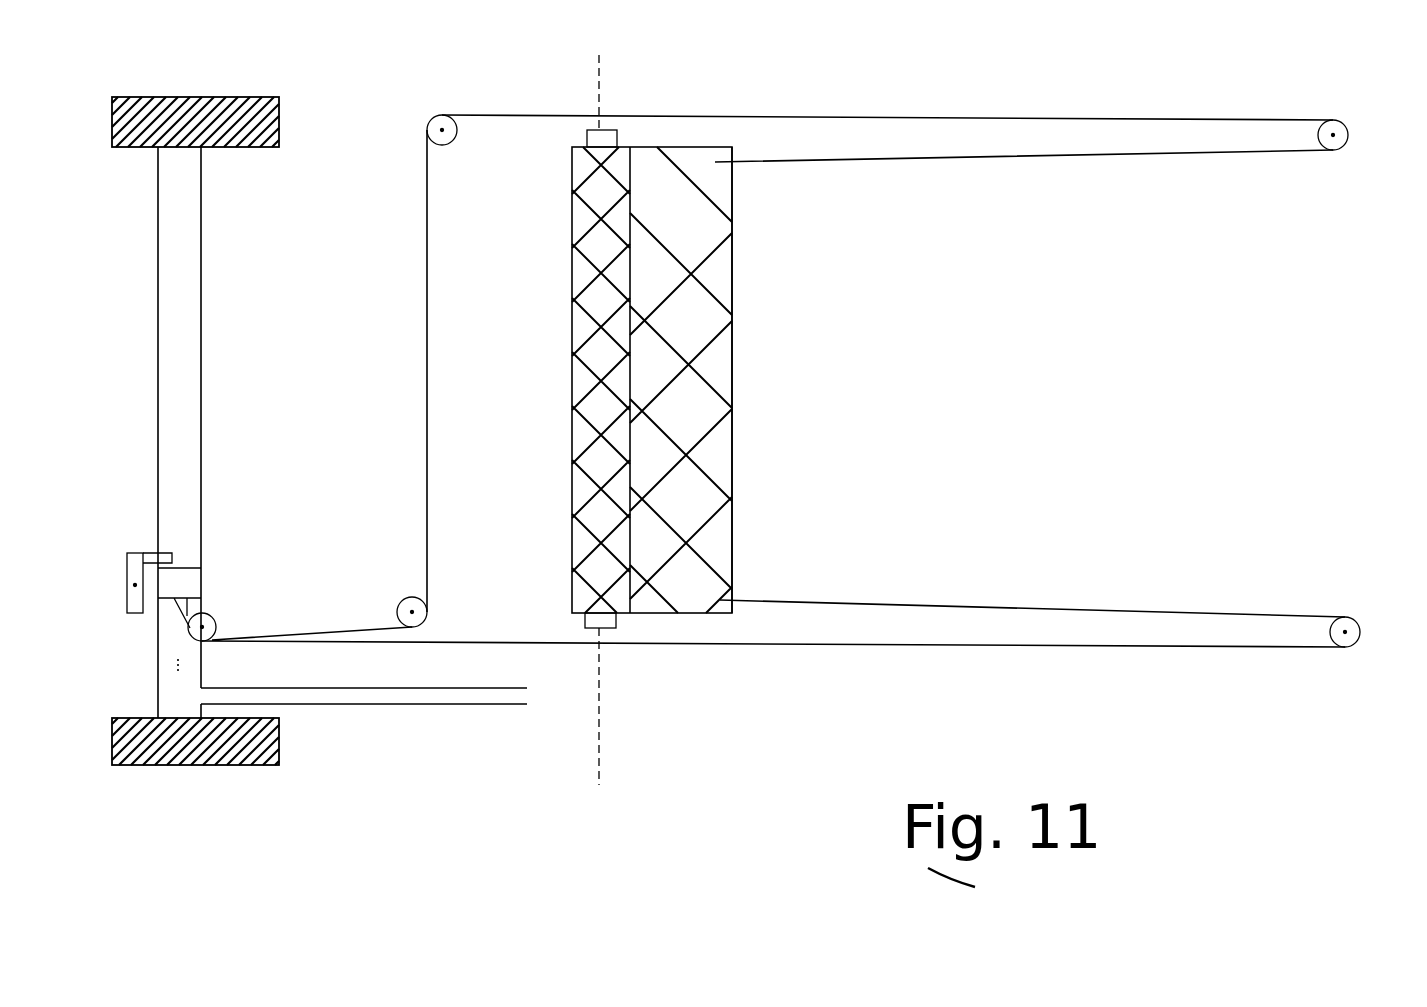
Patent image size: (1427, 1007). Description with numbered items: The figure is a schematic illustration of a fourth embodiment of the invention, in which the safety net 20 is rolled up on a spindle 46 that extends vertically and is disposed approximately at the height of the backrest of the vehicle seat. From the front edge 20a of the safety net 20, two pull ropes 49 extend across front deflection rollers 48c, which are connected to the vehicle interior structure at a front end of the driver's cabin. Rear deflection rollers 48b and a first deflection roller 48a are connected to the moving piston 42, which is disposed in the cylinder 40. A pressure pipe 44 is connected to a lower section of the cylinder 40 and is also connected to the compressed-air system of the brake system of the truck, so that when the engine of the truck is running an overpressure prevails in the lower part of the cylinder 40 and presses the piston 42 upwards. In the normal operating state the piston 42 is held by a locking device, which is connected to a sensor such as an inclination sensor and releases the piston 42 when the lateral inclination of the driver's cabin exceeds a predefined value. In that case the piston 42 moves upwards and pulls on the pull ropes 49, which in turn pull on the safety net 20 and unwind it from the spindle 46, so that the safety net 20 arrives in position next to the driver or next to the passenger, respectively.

The safety net 20 is at (720, 355).
The front edge 20a is at (732, 270).
The cylinder 40 is at (192, 354).
The piston 42 is at (175, 583).
The pressure pipe 44 is at (378, 705).
The spindle 46 is at (598, 140).
The first deflection roller 48a is at (210, 622).
The rear deflection rollers 48b is at (441, 125).
The front deflection rollers 48c is at (1340, 140).
The pull ropes 49 is at (1022, 118).